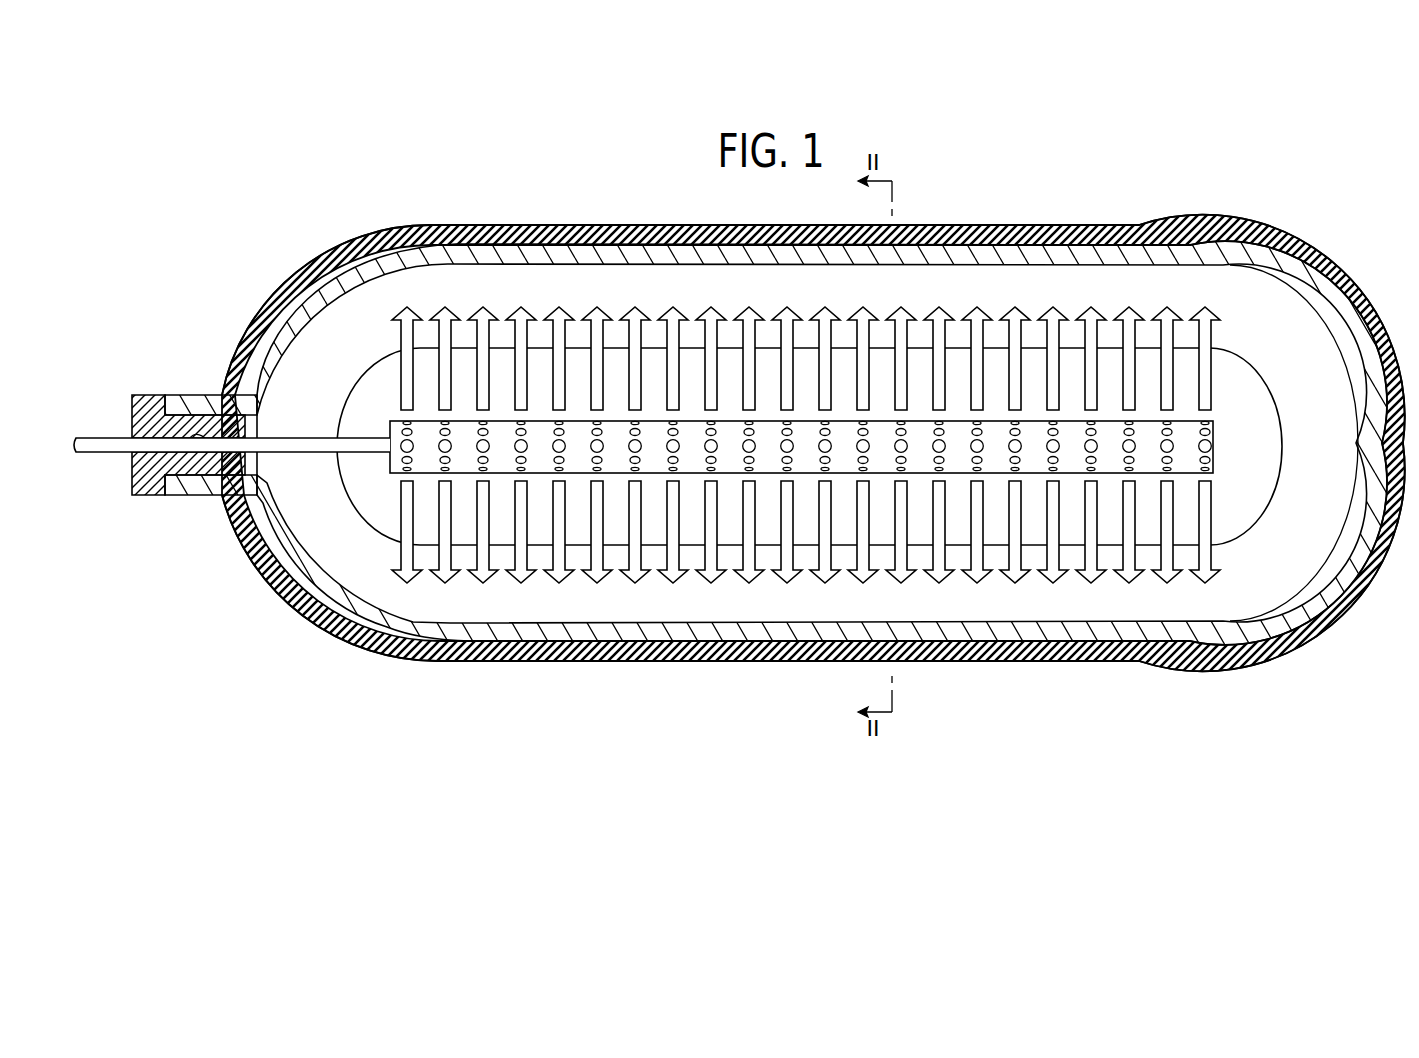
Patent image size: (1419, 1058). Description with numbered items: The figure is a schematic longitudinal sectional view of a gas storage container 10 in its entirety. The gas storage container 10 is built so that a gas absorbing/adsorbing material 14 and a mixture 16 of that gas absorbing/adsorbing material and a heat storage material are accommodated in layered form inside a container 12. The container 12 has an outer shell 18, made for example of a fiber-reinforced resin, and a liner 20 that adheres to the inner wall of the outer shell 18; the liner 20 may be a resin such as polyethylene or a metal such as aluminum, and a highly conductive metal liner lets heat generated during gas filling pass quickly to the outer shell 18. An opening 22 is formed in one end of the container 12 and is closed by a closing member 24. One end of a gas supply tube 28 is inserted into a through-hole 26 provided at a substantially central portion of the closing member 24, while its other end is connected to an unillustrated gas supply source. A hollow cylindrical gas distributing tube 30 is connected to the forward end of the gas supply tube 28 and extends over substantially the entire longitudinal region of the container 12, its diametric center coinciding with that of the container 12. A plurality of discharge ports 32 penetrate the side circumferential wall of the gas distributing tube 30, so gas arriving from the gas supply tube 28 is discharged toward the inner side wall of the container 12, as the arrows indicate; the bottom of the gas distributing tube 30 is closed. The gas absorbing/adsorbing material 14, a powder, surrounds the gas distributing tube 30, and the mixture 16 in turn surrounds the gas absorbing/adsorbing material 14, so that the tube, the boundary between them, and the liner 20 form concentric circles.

The gas storage container 10 is at (314, 169).
The container 12 is at (813, 490).
The gas absorbing/adsorbing material 14 is at (1257, 447).
The mixture 16 is at (1303, 488).
The outer shell 18 is at (494, 660).
The liner 20 is at (543, 646).
The opening 22 is at (208, 478).
The closing member 24 is at (141, 478).
The through-hole 26 is at (193, 432).
The gas supply tube 28 is at (107, 444).
The gas distributing tube 30 is at (427, 458).
The discharge ports 32 is at (558, 445).